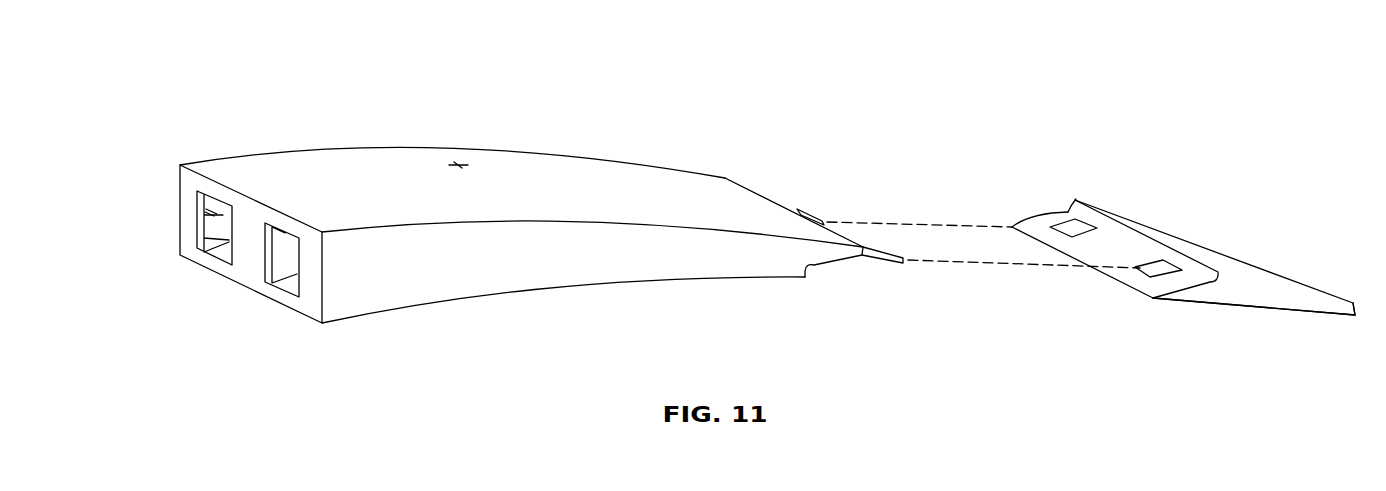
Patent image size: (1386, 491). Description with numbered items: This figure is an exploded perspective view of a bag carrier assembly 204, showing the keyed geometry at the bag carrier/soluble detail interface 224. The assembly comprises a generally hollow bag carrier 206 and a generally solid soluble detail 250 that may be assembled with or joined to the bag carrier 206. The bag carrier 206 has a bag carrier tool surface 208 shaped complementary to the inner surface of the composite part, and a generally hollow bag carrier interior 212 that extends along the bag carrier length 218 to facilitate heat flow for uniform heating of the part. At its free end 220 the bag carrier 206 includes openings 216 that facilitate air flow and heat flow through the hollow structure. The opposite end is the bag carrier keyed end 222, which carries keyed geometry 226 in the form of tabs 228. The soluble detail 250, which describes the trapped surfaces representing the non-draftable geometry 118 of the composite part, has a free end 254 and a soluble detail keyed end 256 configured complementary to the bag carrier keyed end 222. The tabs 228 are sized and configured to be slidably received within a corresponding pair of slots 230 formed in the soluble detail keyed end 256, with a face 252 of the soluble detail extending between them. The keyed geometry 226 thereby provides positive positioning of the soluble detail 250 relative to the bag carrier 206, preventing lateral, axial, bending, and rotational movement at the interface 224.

The bag carrier assembly 204 is at (948, 87).
The bag carrier 206 is at (340, 150).
The bag carrier tool surface 208 is at (455, 162).
The bag carrier end 220 is at (180, 165).
The hollow bag carrier interior 212 is at (223, 214).
The openings 216 is at (210, 257).
The bag carrier length 218 is at (570, 281).
The bag carrier keyed end 222 is at (725, 178).
The bag carrier/soluble detail interface 224 is at (812, 267).
The keyed geometry 226 is at (910, 266).
The tabs 228 is at (805, 212).
The soluble detail 250 is at (1196, 260).
The plate face 252 is at (1180, 237).
The soluble detail keyed end 256 is at (1060, 212).
The slots 230 is at (1077, 238).
The non-draftable geometry 118 is at (1258, 307).
The free end 254 is at (1355, 315).